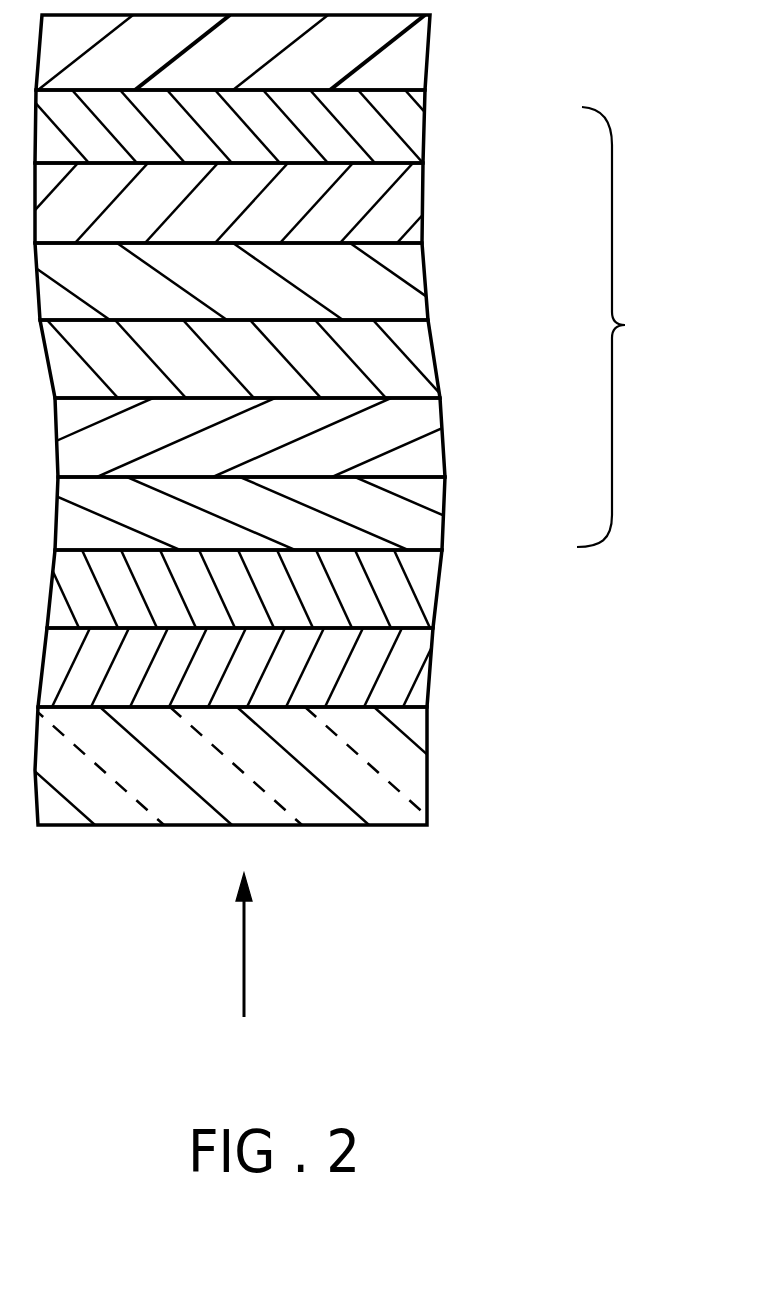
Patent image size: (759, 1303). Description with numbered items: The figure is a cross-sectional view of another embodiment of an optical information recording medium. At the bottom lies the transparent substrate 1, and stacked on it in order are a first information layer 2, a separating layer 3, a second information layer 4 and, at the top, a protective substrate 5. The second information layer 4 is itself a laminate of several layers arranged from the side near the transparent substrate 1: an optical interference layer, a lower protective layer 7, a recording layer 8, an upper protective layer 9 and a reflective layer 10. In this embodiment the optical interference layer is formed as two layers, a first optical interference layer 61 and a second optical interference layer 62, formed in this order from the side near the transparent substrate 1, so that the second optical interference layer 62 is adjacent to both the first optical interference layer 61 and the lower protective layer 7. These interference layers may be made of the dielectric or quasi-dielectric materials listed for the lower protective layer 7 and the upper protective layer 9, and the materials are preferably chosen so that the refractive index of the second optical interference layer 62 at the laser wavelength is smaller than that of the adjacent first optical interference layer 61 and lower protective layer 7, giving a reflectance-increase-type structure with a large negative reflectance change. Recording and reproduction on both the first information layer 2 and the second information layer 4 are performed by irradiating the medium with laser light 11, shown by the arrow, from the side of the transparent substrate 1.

The transparent substrate 1 is at (408, 768).
The first information layer 2 is at (400, 678).
The separating layer 3 is at (423, 595).
The second information layer 4 is at (619, 327).
The protective substrate 5 is at (410, 70).
The first optical interference layer 61 is at (417, 528).
The second optical interference layer 62 is at (425, 452).
The lower protective layer 7 is at (410, 373).
The recording layer 8 is at (400, 293).
The upper protective layer 9 is at (390, 218).
The reflective layer 10 is at (402, 132).
The laser light 11 is at (244, 958).